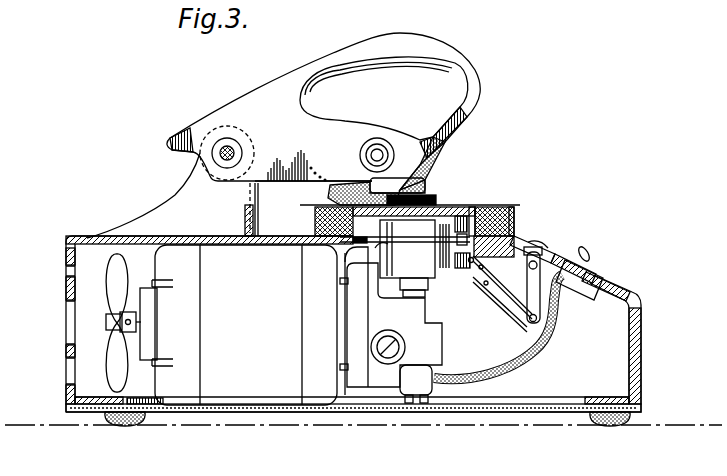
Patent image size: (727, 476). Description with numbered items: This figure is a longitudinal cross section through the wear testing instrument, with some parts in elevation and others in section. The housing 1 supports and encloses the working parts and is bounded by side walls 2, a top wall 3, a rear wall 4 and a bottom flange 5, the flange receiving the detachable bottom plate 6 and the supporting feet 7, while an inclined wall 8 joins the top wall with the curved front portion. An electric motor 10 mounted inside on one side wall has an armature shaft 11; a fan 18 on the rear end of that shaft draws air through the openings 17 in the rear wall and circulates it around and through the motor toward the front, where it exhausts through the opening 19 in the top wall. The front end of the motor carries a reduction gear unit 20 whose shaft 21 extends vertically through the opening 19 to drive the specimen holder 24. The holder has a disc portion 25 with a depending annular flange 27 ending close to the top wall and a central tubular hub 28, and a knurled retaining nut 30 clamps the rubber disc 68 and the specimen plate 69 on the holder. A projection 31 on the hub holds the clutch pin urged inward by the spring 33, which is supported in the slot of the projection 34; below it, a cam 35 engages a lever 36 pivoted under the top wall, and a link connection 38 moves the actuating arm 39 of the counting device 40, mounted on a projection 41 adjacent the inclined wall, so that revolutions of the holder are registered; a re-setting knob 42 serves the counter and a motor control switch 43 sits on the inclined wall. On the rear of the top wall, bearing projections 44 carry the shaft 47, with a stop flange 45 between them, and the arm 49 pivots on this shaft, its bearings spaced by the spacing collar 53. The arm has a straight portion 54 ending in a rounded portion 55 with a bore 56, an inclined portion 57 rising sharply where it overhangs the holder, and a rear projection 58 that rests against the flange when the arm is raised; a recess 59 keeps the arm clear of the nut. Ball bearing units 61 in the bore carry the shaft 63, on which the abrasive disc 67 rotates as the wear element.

The housing 1 is at (639, 383).
The side walls 2 is at (612, 339).
The top wall 3 is at (200, 236).
The rear wall 4 is at (67, 290).
The bottom flange 5 is at (97, 412).
The bottom plate 6 is at (218, 412).
The supporting feet 7 is at (134, 426).
The inclined wall 8 is at (617, 282).
The electric motor 10 is at (269, 390).
The armature shaft 11 is at (140, 322).
The openings 17 is at (69, 262).
The fan 18 is at (118, 348).
The opening 19 is at (338, 252).
The reduction gear unit 20 is at (430, 338).
The shaft 21 is at (427, 293).
The specimen holder 24 is at (309, 225).
The disc portion 25 is at (440, 212).
The annular flange 27 is at (513, 219).
The tubular hub 28 is at (430, 283).
The retaining nut 30 is at (434, 195).
The projection 31 is at (462, 216).
The spring 33 is at (423, 245).
The projection 34 is at (378, 246).
The cam 35 is at (452, 268).
The lever 36 is at (472, 258).
The link connection 38 is at (522, 300).
The actuating arm 39 is at (528, 320).
The counting device 40 is at (556, 257).
The projection 41 is at (488, 294).
The re-setting knob 42 is at (548, 245).
The motor control switch 43 is at (596, 264).
The bearing projections 44 is at (188, 188).
The flange 45 is at (245, 215).
The shaft 47 is at (242, 152).
The arm 49 is at (471, 87).
The spacing collar 53 is at (232, 167).
The straight portion 54 is at (310, 185).
The rounded portion 55 is at (353, 192).
The bore 56 is at (370, 150).
The inclined portion 57 is at (462, 118).
The projection 58 is at (173, 142).
The recess 59 is at (370, 182).
The ball bearing units 61 is at (389, 161).
The shaft 63 is at (386, 150).
The abrasive disc 67 is at (427, 183).
The rubber disc 68 is at (514, 208).
The specimen plate 69 is at (496, 207).